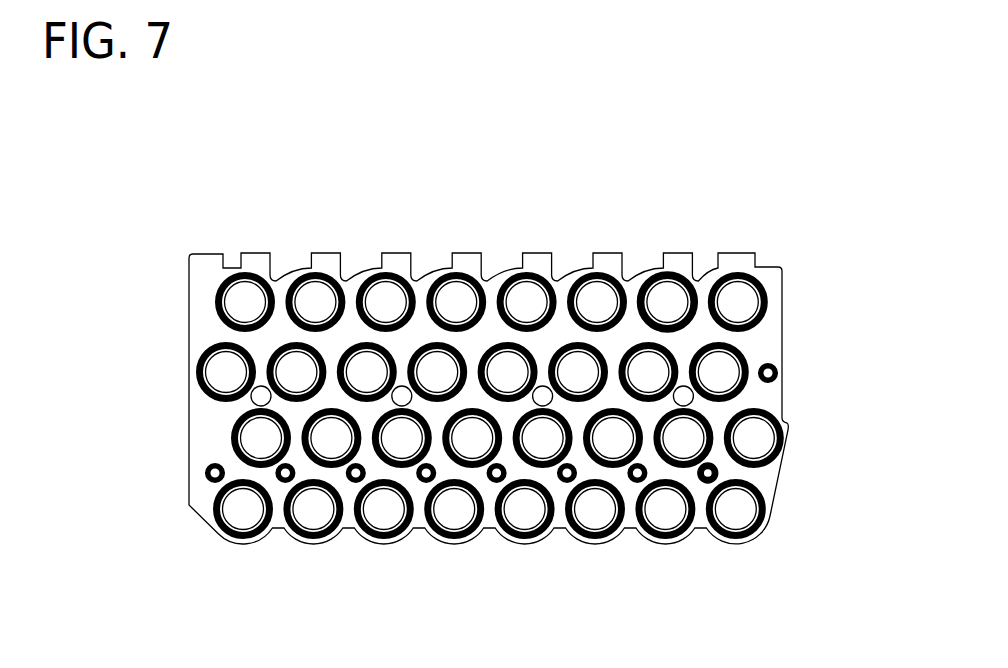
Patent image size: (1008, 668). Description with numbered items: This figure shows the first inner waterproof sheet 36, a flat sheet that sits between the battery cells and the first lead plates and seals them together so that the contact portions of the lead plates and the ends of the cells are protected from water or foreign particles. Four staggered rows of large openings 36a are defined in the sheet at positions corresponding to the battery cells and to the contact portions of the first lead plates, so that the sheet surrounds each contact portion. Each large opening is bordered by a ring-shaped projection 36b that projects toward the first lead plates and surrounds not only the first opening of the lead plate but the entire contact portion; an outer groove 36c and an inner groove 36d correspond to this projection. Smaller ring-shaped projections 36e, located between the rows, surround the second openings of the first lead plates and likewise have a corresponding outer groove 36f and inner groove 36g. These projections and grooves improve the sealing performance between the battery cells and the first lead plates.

The first inner waterproof sheet 36 is at (785, 169).
The opening 36a is at (660, 317).
The ring-shaped projection 36b is at (670, 272).
The outer groove 36c is at (688, 298).
The inner groove 36d is at (730, 320).
The ring-shaped projection 36e is at (713, 468).
The outer groove 36f is at (713, 464).
The inner groove 36g is at (707, 478).